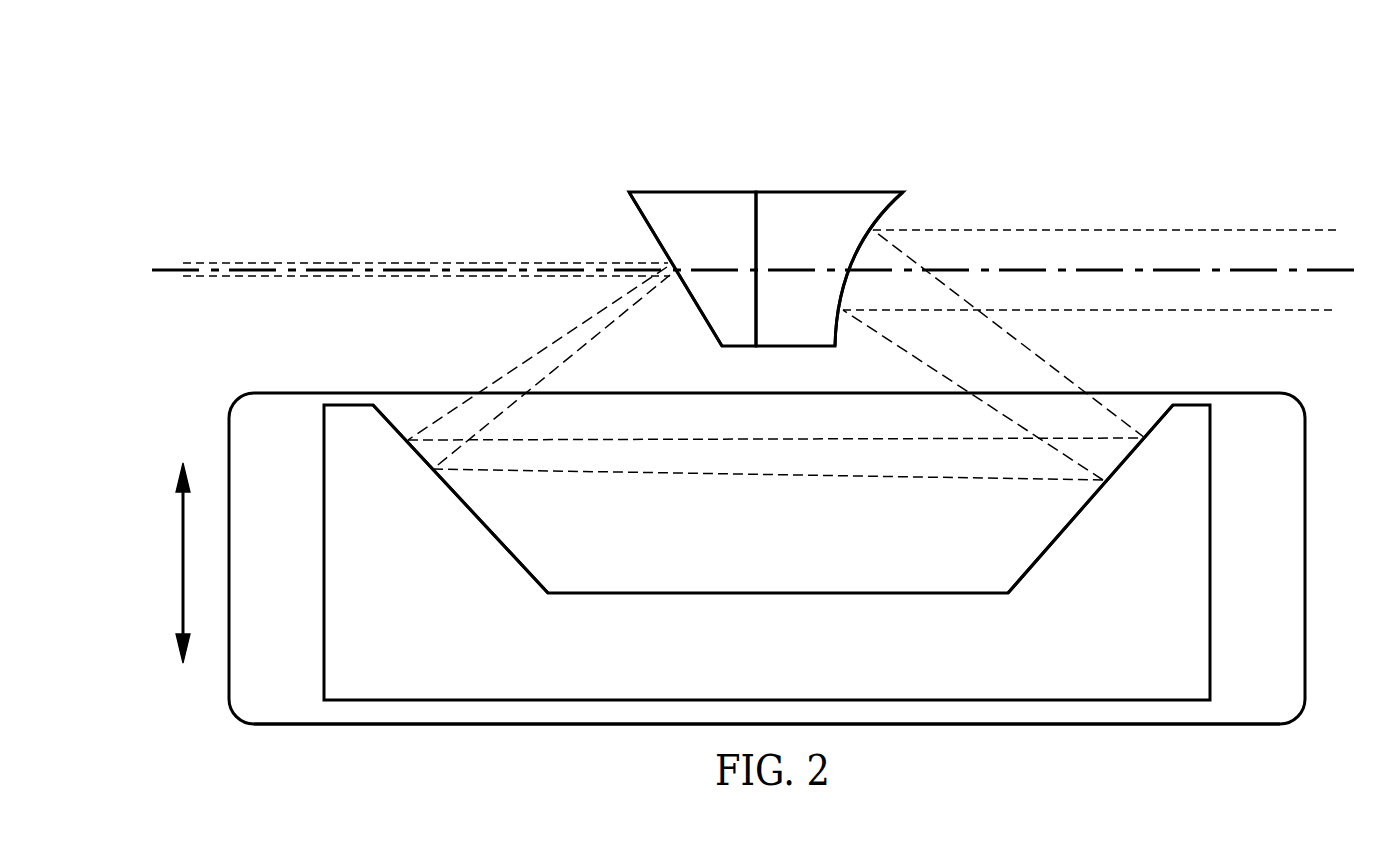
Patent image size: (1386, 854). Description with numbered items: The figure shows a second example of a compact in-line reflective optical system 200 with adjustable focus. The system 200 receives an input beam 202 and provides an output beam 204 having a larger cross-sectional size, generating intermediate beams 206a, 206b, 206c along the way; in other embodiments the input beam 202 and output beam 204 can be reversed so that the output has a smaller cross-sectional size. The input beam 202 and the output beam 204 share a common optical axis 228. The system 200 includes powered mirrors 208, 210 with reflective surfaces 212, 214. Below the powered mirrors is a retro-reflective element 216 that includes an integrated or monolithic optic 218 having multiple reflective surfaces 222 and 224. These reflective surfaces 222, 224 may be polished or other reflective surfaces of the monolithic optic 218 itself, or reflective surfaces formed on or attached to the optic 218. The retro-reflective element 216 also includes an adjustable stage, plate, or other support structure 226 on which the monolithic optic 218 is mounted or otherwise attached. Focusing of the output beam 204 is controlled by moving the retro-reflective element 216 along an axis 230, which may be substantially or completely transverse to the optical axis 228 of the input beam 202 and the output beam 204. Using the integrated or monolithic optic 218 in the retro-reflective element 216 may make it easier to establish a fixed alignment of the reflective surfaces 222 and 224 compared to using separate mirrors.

The compact in-line reflective optical system 200 is at (362, 115).
The input beam 202 is at (425, 262).
The output beam 204 is at (1110, 228).
The intermediate beam 206a is at (607, 329).
The intermediate beam 206b is at (775, 476).
The intermediate beam 206c is at (877, 333).
The powered mirror 208 is at (693, 198).
The powered mirror 210 is at (828, 200).
The reflective surface 212 is at (645, 232).
The reflective surface 214 is at (896, 210).
The retro-reflective element 216 is at (1018, 755).
The integrated or monolithic optic 218 is at (322, 553).
The reflective surface 222 is at (492, 532).
The reflective surface 224 is at (1055, 533).
The support structure 226 is at (1115, 725).
The optical axis 228 is at (165, 263).
The axis 230 is at (180, 565).